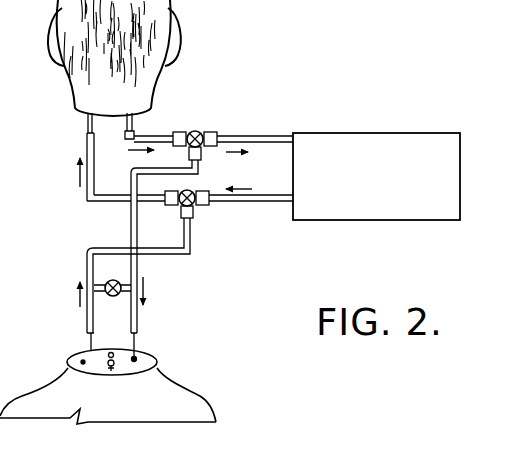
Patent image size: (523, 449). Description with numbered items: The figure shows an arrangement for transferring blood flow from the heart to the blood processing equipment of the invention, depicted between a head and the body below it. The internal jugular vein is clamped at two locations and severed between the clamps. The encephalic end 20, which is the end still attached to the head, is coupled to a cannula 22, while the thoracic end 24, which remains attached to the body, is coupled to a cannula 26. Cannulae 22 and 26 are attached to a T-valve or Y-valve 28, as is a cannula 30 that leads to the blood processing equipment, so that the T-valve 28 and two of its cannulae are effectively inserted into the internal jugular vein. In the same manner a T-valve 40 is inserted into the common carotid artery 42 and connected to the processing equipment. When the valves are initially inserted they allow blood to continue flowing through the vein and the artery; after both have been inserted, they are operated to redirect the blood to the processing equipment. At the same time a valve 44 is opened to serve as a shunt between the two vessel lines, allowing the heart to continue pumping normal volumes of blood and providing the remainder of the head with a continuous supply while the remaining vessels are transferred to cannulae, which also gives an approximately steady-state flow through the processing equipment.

The encephalic end 20 is at (197, 114).
The cannula 22 is at (200, 121).
The thoracic end 24 is at (140, 340).
The cannula 26 is at (141, 326).
The T-valve 28 is at (206, 153).
The cannula 30 is at (237, 134).
The T-valve 40 is at (200, 211).
The common carotid artery 42 is at (84, 123).
The valve 44 is at (123, 280).